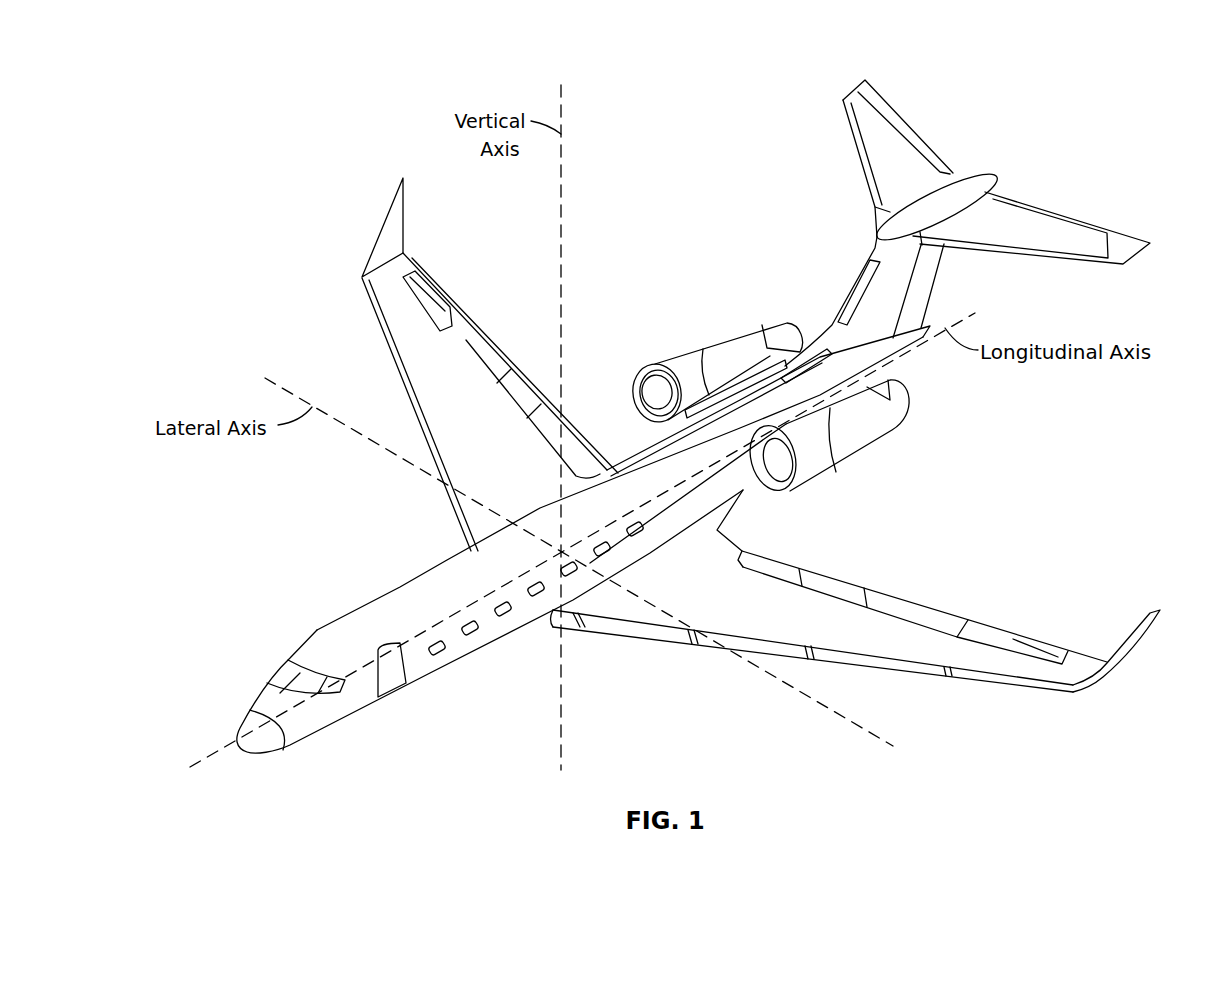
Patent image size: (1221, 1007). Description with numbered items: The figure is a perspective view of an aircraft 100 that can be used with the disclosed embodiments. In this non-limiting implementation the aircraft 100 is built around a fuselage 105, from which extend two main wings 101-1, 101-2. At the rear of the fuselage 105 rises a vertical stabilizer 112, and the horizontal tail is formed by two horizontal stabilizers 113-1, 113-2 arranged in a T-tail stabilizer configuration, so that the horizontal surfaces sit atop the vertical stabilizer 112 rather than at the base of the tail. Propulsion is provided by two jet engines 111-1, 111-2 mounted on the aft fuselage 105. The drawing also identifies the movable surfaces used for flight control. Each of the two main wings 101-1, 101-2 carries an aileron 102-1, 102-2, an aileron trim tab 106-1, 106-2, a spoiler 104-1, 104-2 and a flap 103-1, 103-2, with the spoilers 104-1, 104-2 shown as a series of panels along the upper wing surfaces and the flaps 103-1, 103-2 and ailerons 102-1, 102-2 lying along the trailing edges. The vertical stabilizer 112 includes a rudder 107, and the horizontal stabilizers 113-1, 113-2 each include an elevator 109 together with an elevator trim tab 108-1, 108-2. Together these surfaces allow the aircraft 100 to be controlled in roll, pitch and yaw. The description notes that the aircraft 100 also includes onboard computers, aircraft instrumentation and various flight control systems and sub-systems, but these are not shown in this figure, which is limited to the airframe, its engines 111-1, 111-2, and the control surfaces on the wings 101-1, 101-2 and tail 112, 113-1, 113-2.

The aircraft 100 is at (195, 80).
The main wing 101-1 is at (368, 283).
The main wing 101-2 is at (1055, 670).
The aileron 102-1 is at (430, 312).
The aileron 102-2 is at (963, 628).
The flap 103-1 is at (510, 350).
The flap 103-2 is at (931, 605).
The spoiler 104-1 is at (530, 430).
The spoiler 104-2 is at (790, 575).
The fuselage 105 is at (368, 623).
The aileron trim tab 106-1 is at (437, 282).
The aileron trim tab 106-2 is at (1038, 647).
The rudder 107 is at (927, 308).
The elevator trim tab 108-1 is at (905, 110).
The elevator trim tab 108-2 is at (1065, 210).
The elevator 109 is at (993, 187).
The jet engine 111-1 is at (714, 330).
The jet engine 111-2 is at (862, 424).
The vertical stabilizer 112 is at (875, 247).
The horizontal stabilizer 113-1 is at (865, 138).
The horizontal stabilizer 113-2 is at (1113, 248).